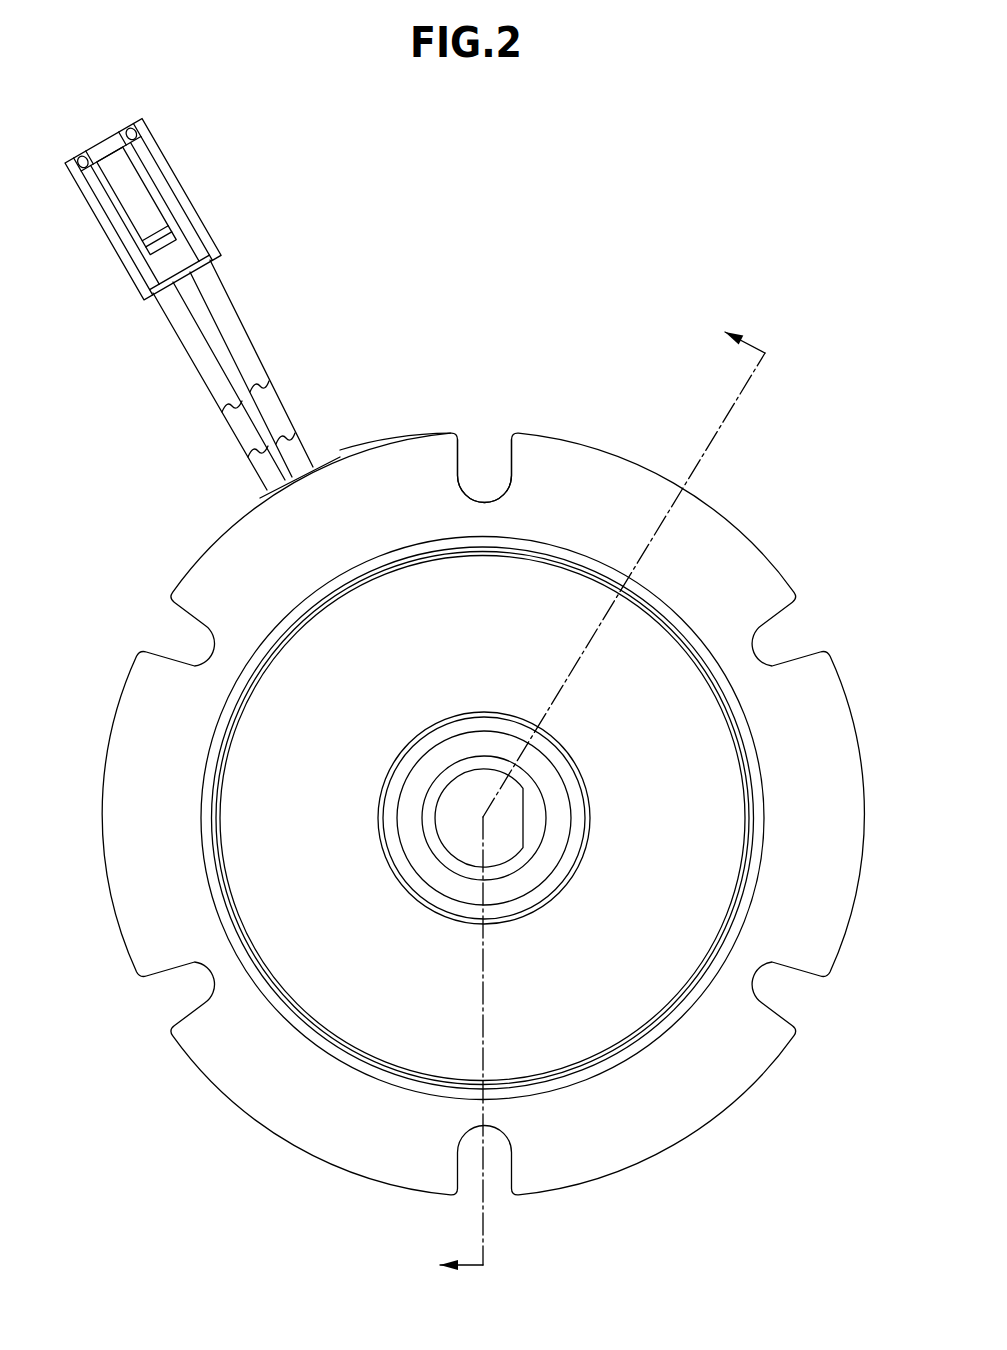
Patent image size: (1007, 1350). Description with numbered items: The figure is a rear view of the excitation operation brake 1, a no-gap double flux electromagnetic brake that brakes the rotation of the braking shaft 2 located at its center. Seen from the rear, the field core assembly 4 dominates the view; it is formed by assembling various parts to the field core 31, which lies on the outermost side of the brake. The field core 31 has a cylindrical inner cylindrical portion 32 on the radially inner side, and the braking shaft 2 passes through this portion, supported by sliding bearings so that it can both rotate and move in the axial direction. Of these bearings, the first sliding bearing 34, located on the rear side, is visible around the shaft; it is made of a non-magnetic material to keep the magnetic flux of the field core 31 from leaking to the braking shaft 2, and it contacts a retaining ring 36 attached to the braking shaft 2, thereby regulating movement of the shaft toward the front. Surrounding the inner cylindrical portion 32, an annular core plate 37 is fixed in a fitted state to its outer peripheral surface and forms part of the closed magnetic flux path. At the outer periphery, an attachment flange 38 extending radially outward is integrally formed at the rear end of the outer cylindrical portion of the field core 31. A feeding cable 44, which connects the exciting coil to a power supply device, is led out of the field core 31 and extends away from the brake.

The excitation operation brake 1 is at (583, 225).
The braking shaft 2 is at (437, 807).
The field core assembly 4 is at (604, 448).
The field core 31 is at (542, 432).
The inner cylindrical portion 32 is at (413, 890).
The first sliding bearing 34 is at (397, 878).
The retaining ring 36 is at (410, 829).
The core plate 37 is at (427, 1035).
The attachment flange 38 is at (393, 460).
The feeding cable 44 is at (218, 328).